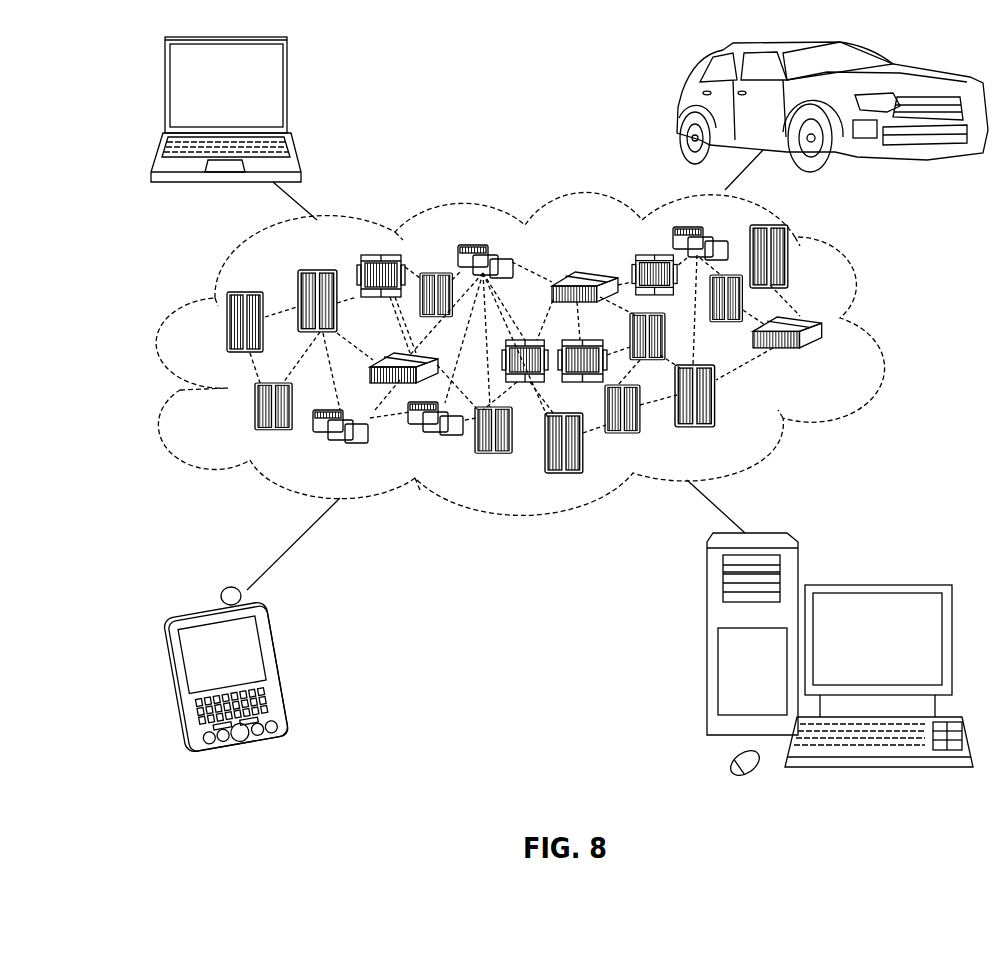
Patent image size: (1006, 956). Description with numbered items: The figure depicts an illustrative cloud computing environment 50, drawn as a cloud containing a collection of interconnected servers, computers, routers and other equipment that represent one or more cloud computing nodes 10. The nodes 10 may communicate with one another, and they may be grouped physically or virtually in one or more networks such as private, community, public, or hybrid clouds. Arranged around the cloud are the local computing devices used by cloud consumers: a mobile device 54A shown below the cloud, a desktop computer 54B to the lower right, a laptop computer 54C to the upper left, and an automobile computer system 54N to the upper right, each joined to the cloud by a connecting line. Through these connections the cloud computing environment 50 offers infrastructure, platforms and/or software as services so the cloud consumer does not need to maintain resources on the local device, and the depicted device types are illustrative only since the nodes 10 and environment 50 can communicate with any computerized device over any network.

The cloud computing node 10 is at (834, 358).
The cloud computing environment 50 is at (880, 330).
The mobile device 54A is at (280, 665).
The desktop computer 54B is at (873, 583).
The laptop computer 54C is at (288, 92).
The automobile computer system 54N is at (680, 107).